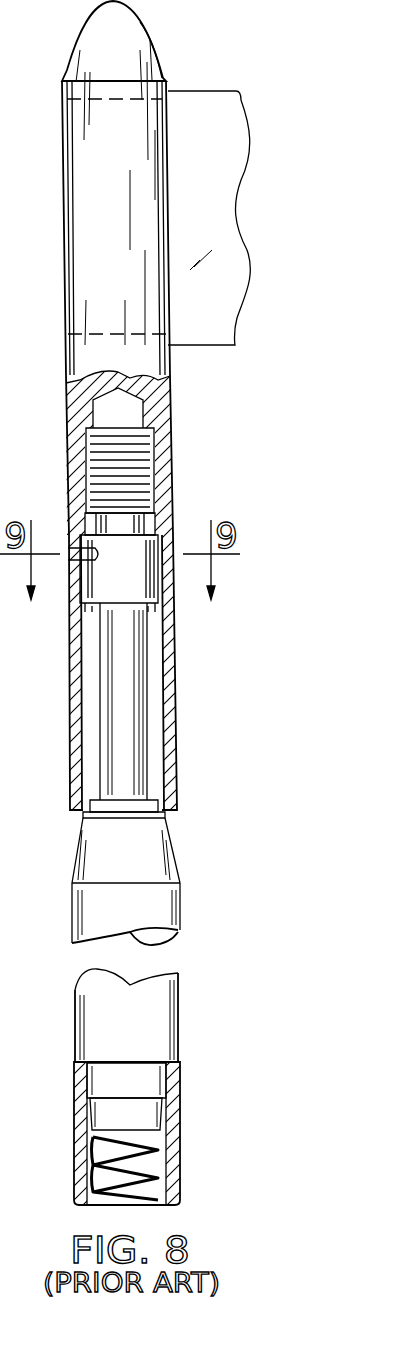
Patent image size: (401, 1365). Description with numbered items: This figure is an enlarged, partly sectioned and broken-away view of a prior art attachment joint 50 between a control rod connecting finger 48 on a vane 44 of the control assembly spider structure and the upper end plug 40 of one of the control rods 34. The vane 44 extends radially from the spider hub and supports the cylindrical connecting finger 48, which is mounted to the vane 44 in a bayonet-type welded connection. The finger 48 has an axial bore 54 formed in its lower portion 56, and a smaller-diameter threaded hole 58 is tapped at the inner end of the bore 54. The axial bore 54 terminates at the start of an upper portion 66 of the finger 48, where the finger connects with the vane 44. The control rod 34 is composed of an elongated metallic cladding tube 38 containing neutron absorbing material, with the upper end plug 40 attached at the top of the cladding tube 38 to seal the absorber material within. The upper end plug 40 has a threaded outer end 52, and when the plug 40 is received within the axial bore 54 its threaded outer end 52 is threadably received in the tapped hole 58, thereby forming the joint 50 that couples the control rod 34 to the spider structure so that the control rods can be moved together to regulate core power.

The control rod 34 is at (182, 1138).
The cladding tube 38 is at (181, 1093).
The upper end plug 40 is at (147, 665).
The vane 44 is at (194, 91).
The control rod connecting finger 48 is at (177, 712).
The attachment joint 50 is at (66, 623).
The threaded outer end 52 is at (100, 458).
The axial bore 54 is at (80, 730).
The lower portion 56 is at (71, 688).
The threaded hole 58 is at (143, 462).
The upper portion 66 is at (38, 238).